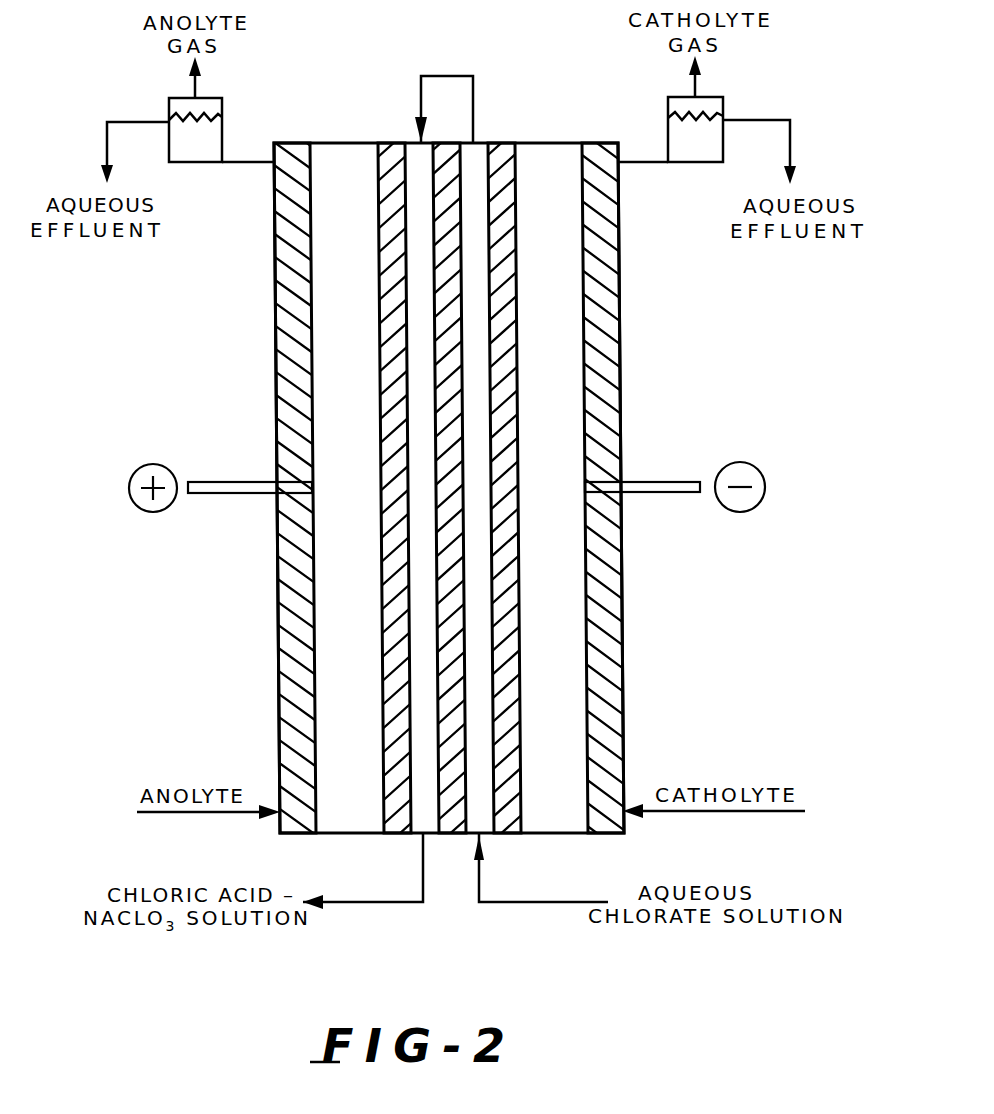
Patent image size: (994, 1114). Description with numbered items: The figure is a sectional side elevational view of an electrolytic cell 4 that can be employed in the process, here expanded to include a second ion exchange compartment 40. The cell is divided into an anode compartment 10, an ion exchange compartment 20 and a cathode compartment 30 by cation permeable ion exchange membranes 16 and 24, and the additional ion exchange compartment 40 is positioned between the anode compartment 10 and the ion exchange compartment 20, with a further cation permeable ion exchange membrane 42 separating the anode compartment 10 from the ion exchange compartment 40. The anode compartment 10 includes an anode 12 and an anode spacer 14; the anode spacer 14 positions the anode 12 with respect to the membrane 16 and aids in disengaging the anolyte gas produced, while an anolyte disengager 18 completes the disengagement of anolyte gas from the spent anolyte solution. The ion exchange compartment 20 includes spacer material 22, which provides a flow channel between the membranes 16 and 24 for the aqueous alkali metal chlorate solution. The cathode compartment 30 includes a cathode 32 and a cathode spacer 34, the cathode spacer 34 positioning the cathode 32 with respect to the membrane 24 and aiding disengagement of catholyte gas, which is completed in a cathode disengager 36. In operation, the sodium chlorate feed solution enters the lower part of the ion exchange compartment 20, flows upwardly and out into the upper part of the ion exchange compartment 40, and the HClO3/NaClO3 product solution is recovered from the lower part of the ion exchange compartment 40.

The electrolytic cell 4 is at (442, 475).
The anode compartment 10 is at (321, 130).
The anode 12 is at (350, 822).
The anode spacer 14 is at (277, 302).
The cation permeable ion exchange membrane 16 is at (390, 143).
The anolyte disengager 18 is at (195, 163).
The ion exchange compartment 20 is at (473, 450).
The spacer material 22 is at (478, 150).
The cation permeable ion exchange membrane 24 is at (505, 822).
The cathode compartment 30 is at (563, 842).
The cathode 32 is at (555, 153).
The cathode spacer 34 is at (617, 627).
The cathode disengager 36 is at (697, 163).
The second ion exchange compartment 40 is at (413, 417).
The cation permeable ion exchange membrane 42 is at (450, 837).